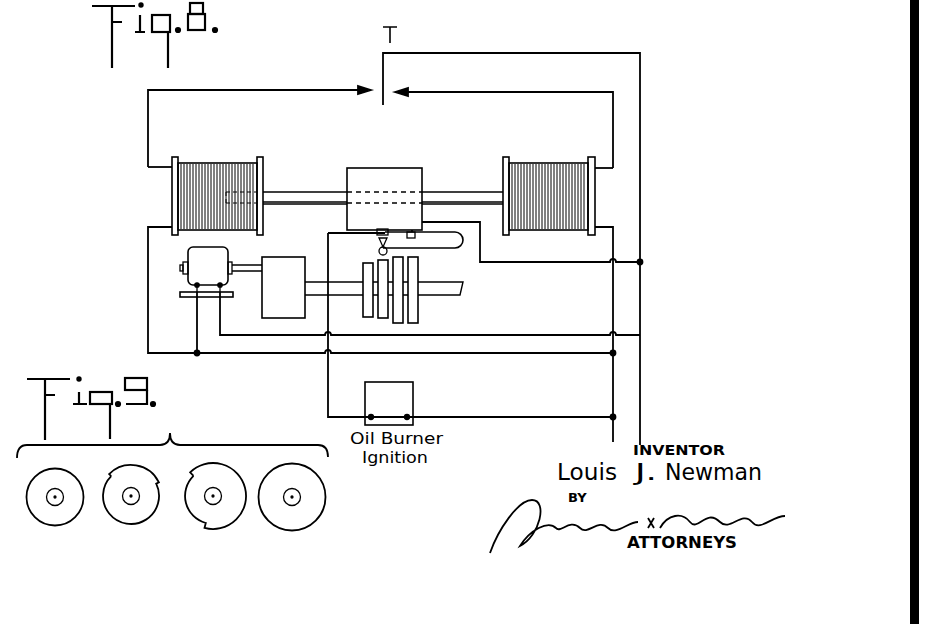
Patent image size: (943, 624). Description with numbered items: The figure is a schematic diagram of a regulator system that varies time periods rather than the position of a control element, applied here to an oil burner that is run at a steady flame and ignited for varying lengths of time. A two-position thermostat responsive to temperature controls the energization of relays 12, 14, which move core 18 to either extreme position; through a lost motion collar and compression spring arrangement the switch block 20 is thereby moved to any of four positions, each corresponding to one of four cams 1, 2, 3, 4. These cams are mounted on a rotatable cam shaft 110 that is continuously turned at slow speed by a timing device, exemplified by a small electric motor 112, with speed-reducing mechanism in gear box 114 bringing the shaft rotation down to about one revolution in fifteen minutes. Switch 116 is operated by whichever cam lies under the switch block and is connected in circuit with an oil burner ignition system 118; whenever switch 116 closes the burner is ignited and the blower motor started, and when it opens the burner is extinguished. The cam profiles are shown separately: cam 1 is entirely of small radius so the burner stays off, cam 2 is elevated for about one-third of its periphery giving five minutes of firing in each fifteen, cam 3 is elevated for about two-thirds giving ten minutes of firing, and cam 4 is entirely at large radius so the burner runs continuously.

In FIG. 8, the relay 12 is at (207, 163).
In FIG. 8, the relay 14 is at (540, 163).
In FIG. 8, the core 18 is at (294, 195).
In FIG. 8, the switch block 20 is at (378, 172).
In FIG. 8, the cam shaft 110 is at (396, 304).
In FIG. 8, the electric motor 112 is at (188, 253).
In FIG. 8, the gear box 114 is at (281, 264).
In FIG. 8, the switch 116 is at (443, 230).
In FIG. 8, the oil burner ignition system 118 is at (398, 398).
In FIG. 8, the cam 1 is at (368, 307).
In FIG. 9, the cam 1 is at (55, 513).
In FIG. 8, the cam 2 is at (383, 305).
In FIG. 9, the cam 2 is at (131, 511).
In FIG. 8, the cam 3 is at (398, 304).
In FIG. 9, the cam 3 is at (215, 510).
In FIG. 8, the cam 4 is at (413, 304).
In FIG. 9, the cam 4 is at (292, 511).